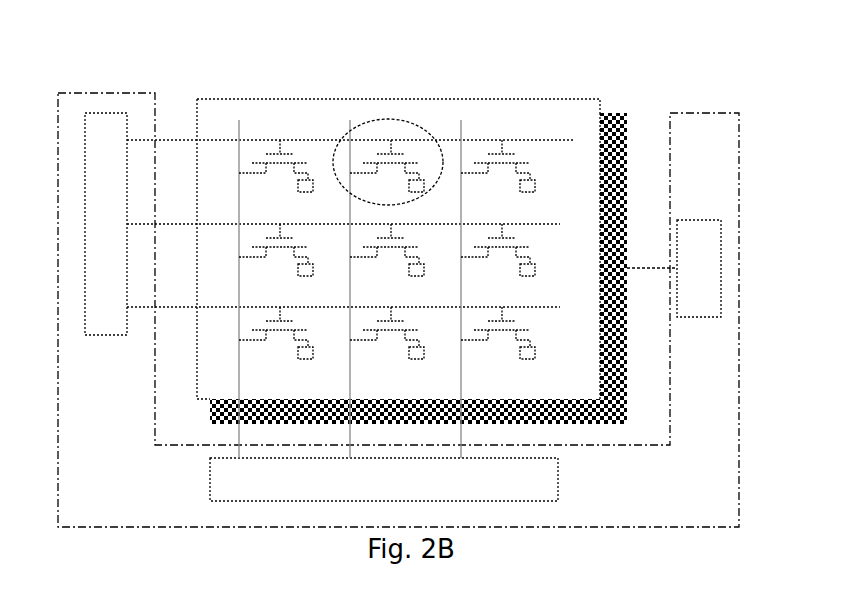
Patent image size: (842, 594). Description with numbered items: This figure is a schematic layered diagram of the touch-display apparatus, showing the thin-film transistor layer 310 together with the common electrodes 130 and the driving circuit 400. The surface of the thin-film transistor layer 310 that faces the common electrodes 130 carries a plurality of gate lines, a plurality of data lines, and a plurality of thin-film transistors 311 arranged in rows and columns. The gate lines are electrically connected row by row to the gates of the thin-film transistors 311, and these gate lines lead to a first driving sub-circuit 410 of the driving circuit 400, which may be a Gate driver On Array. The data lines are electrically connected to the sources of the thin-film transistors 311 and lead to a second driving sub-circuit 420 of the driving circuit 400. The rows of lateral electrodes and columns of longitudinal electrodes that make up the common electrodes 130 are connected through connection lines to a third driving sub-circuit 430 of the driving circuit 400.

The driving circuit 400 is at (707, 113).
The first driving sub-circuit 410 is at (105, 113).
The second driving sub-circuit 420 is at (562, 478).
The third driving sub-circuit 430 is at (698, 220).
The common electrodes 130 is at (618, 112).
The thin-film transistor layer 310 is at (547, 98).
The thin-film transistor 311 is at (392, 117).